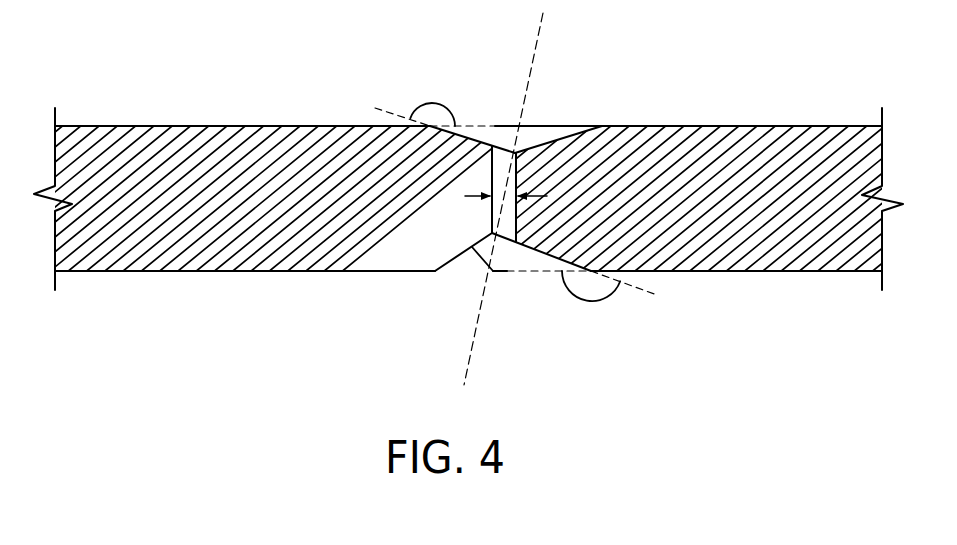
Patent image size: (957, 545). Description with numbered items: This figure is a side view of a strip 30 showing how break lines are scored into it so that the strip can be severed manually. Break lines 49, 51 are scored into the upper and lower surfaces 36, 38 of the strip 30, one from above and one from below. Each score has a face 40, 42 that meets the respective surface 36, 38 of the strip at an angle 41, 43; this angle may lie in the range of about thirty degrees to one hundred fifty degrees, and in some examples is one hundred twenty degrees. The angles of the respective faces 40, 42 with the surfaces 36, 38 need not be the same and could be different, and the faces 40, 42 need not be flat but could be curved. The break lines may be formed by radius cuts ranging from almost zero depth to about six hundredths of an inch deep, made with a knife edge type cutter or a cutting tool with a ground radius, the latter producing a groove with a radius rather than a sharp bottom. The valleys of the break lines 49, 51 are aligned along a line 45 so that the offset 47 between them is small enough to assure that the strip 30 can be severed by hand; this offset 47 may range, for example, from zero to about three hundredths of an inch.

The strip 30 is at (751, 121).
The upper surface 36 is at (256, 121).
The lower surface 38 is at (293, 276).
The face of the score 40 is at (550, 140).
The angle 41 is at (431, 103).
The face of the score 42 is at (468, 136).
The angle 43 is at (595, 300).
The line 45 is at (535, 45).
The offset 47 is at (507, 205).
The break line 49 is at (520, 152).
The break line 51 is at (492, 233).